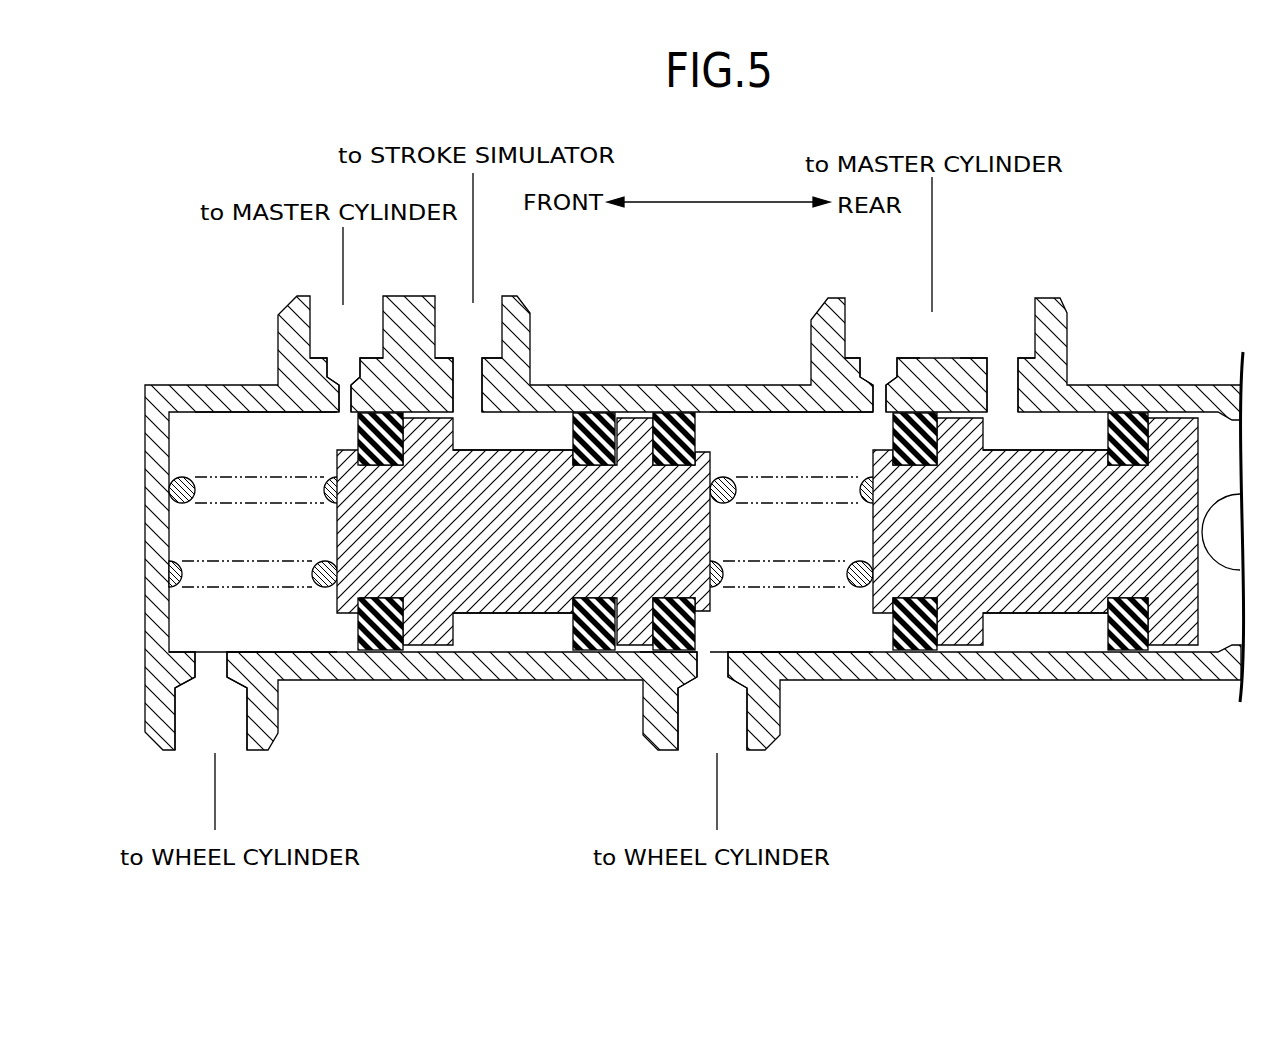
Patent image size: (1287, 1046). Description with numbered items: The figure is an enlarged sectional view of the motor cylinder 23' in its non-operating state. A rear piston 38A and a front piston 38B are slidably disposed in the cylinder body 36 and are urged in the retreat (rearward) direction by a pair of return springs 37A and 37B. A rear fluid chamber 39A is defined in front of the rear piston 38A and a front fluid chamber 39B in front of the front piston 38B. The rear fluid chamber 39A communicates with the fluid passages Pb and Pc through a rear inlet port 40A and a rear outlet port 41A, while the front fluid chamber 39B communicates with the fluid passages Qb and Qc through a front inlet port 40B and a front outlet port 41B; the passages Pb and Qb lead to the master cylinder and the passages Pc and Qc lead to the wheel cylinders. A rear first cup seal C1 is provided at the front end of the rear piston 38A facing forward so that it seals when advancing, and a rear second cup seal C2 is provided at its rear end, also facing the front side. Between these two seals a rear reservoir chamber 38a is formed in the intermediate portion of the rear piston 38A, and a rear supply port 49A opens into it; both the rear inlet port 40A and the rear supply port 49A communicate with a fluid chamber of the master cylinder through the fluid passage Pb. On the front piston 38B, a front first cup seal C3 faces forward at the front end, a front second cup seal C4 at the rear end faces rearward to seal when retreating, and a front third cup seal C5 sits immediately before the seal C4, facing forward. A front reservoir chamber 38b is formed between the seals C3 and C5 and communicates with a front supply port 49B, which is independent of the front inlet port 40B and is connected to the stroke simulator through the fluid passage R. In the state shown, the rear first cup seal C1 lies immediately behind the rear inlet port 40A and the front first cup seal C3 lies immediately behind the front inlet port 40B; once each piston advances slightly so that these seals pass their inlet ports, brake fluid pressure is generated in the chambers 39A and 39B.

The motor cylinder 23' is at (686, 290).
The cylinder body 36 is at (672, 384).
The return spring 37A is at (732, 478).
The return spring 37B is at (182, 478).
The rear piston 38A is at (1060, 540).
The front piston 38B is at (545, 541).
The rear reservoir chamber 38a is at (1073, 442).
The front reservoir chamber 38b is at (548, 440).
The rear fluid chamber 39A is at (817, 538).
The front fluid chamber 39B is at (273, 540).
The rear inlet port 40A is at (880, 362).
The front inlet port 40B is at (343, 358).
The rear outlet port 41A is at (713, 660).
The front outlet port 41B is at (217, 660).
The rear supply port 49A is at (1003, 365).
The front supply port 49B is at (472, 360).
The rear first cup seal C1 is at (922, 640).
The rear second cup seal C2 is at (1138, 640).
The front first cup seal C3 is at (389, 652).
The front second cup seal C4 is at (652, 655).
The front third cup seal C5 is at (588, 655).
The fluid passage Qb is at (343, 282).
The fluid passage R is at (473, 267).
The fluid passage Pb is at (932, 247).
The fluid passage Qc is at (215, 755).
The fluid passage Pc is at (717, 755).